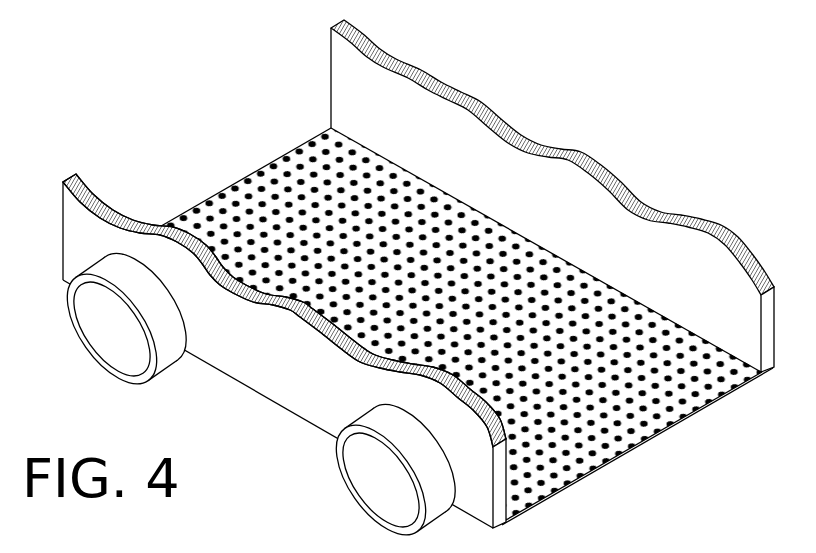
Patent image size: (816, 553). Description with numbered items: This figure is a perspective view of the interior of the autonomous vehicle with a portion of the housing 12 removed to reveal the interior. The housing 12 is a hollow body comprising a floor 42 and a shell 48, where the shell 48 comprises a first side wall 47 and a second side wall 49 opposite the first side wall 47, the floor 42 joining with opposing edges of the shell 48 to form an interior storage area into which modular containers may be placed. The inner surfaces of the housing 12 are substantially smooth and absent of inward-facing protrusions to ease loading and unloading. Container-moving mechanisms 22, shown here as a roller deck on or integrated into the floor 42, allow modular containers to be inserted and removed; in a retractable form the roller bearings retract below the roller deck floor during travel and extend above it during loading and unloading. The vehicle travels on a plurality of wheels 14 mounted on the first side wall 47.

The housing 12 is at (420, 272).
The wheels 14 is at (80, 347).
The container-moving mechanisms 22 is at (686, 402).
The floor 42 is at (420, 325).
The first side wall 47 is at (273, 382).
The shell 48 is at (552, 192).
The second side wall 49 is at (553, 185).